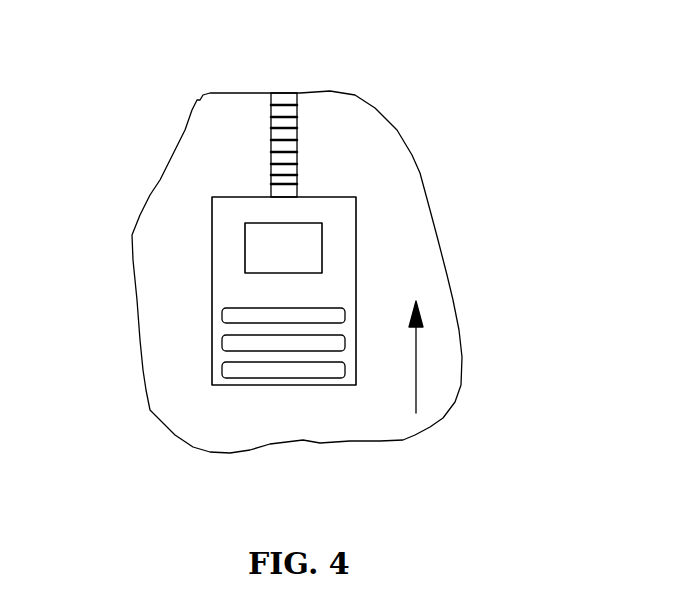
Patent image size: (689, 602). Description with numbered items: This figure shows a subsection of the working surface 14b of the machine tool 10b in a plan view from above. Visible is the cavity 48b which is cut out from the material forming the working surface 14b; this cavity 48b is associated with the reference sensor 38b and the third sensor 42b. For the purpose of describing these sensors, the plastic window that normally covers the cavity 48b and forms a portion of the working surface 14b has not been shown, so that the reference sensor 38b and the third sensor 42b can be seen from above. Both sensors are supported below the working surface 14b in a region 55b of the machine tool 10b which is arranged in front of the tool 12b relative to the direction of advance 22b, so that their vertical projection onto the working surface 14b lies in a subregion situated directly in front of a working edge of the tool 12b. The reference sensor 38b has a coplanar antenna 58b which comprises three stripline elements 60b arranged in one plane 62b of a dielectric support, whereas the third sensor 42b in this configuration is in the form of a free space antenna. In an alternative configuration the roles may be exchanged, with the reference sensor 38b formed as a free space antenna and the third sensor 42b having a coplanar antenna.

The machine tool 10b is at (133, 60).
The tool 12b is at (297, 103).
The working surface 14b is at (377, 142).
The direction of advance 22b is at (418, 362).
The reference sensor 38b is at (368, 311).
The third sensor 42b is at (228, 240).
The cavity 48b is at (246, 180).
The region 55b is at (340, 240).
The coplanar antenna 58b is at (212, 345).
The stripline elements 60b is at (237, 385).
The plane 62b is at (356, 352).